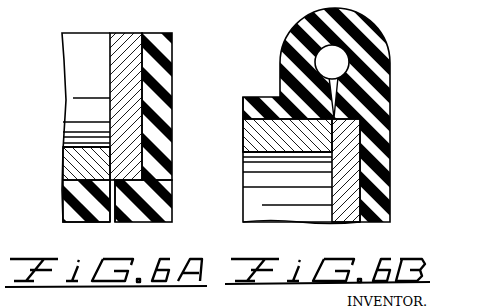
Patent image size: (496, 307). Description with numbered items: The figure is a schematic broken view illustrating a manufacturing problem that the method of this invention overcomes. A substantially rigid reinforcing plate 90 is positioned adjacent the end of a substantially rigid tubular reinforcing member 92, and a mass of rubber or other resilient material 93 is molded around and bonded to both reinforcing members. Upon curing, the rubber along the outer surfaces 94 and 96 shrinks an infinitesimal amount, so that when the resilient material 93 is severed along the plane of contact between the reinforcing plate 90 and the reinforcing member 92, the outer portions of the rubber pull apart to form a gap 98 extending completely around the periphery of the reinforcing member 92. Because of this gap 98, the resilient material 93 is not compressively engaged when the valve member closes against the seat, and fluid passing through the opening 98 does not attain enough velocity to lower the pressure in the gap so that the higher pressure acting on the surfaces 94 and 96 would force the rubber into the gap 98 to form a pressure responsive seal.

In FIG. 6A, the reinforcing plate 90 is at (118, 63).
In FIG. 6B, the reinforcing plate 90 is at (350, 176).
In FIG. 6A, the tubular reinforcing member 92 is at (77, 160).
In FIG. 6B, the tubular reinforcing member 92 is at (257, 137).
In FIG. 6A, the resilient material 93 is at (172, 92).
In FIG. 6B, the resilient material 93 is at (376, 110).
In FIG. 6A, the outer surface 94 is at (82, 224).
In FIG. 6A, the outer surface 96 is at (140, 224).
In FIG. 6A, the gap 98 is at (113, 226).
In FIG. 6B, the gap 98 is at (341, 58).